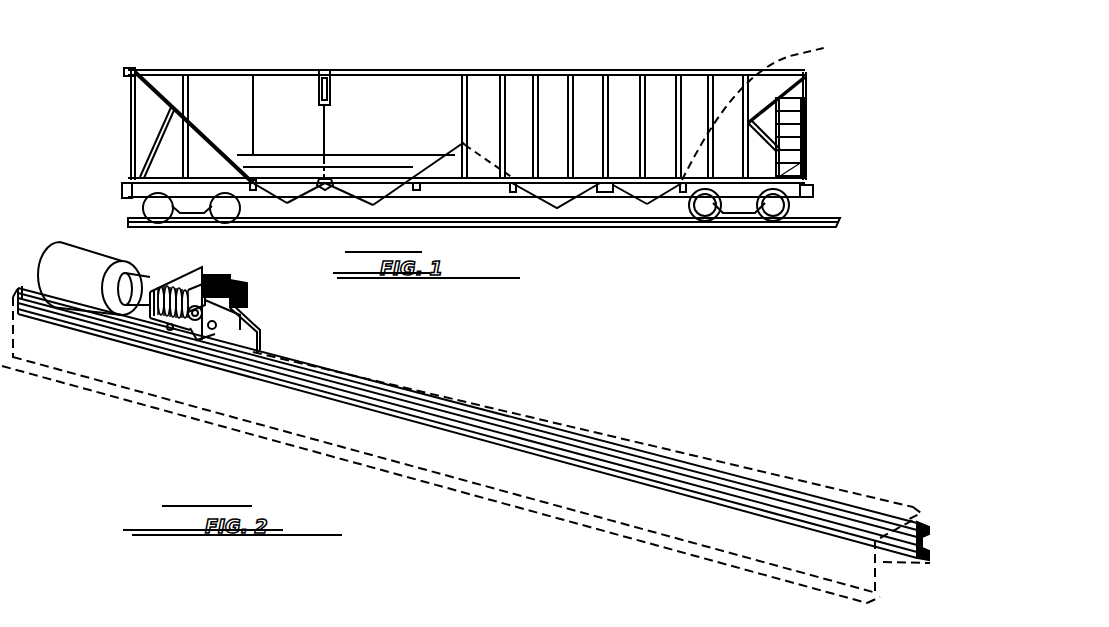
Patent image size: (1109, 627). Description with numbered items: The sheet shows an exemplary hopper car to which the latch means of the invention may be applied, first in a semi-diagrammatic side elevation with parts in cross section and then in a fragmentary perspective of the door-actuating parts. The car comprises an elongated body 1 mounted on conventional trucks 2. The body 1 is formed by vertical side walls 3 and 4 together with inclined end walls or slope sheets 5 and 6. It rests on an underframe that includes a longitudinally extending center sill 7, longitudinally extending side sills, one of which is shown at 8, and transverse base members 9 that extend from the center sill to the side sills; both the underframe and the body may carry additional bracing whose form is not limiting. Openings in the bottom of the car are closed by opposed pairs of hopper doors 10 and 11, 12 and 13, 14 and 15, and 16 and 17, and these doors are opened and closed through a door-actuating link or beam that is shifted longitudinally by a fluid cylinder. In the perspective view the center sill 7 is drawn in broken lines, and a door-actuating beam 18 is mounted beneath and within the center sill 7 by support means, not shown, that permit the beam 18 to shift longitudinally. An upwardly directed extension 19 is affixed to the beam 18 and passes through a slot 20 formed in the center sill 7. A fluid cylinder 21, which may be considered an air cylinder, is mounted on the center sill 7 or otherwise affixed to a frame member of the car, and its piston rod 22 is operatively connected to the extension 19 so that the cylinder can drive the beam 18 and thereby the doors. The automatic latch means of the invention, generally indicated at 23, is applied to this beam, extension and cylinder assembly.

In FIG. 1, the body 1 is at (657, 90).
In FIG. 1, the trucks 2 is at (197, 206).
In FIG. 1, the side wall 3 is at (548, 86).
In FIG. 1, the side wall 4 is at (363, 88).
In FIG. 1, the slope sheet 5 is at (193, 128).
In FIG. 1, the slope sheet 6 is at (654, 107).
In FIG. 1, the center sill 7 is at (490, 192).
In FIG. 2, the center sill 7 is at (597, 498).
In FIG. 1, the side sill 8 is at (545, 183).
In FIG. 1, the transverse base members 9 is at (254, 190).
In FIG. 1, the hopper door 10 is at (287, 204).
In FIG. 1, the hopper door 11 is at (300, 200).
In FIG. 1, the hopper door 12 is at (360, 198).
In FIG. 1, the hopper door 13 is at (385, 198).
In FIG. 1, the hopper door 14 is at (537, 196).
In FIG. 1, the hopper door 15 is at (570, 202).
In FIG. 1, the hopper door 16 is at (637, 200).
In FIG. 1, the hopper door 17 is at (657, 200).
In FIG. 2, the door-actuating beam 18 is at (735, 482).
In FIG. 2, the extension 19 is at (263, 328).
In FIG. 2, the slot 20 is at (300, 355).
In FIG. 2, the fluid cylinder 21 is at (67, 253).
In FIG. 2, the piston rod 22 is at (152, 290).
In FIG. 2, the latch means 23 is at (162, 320).